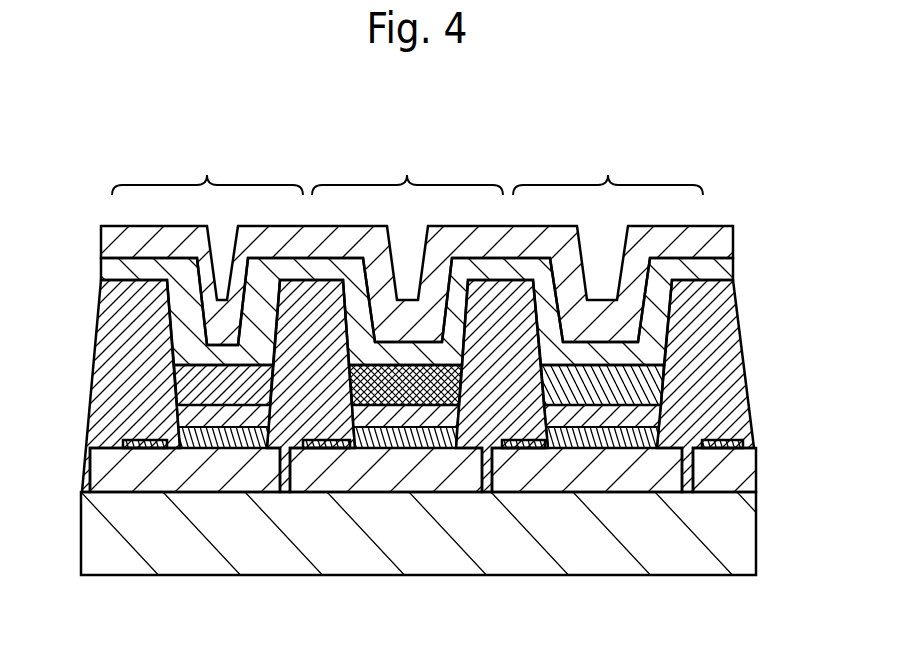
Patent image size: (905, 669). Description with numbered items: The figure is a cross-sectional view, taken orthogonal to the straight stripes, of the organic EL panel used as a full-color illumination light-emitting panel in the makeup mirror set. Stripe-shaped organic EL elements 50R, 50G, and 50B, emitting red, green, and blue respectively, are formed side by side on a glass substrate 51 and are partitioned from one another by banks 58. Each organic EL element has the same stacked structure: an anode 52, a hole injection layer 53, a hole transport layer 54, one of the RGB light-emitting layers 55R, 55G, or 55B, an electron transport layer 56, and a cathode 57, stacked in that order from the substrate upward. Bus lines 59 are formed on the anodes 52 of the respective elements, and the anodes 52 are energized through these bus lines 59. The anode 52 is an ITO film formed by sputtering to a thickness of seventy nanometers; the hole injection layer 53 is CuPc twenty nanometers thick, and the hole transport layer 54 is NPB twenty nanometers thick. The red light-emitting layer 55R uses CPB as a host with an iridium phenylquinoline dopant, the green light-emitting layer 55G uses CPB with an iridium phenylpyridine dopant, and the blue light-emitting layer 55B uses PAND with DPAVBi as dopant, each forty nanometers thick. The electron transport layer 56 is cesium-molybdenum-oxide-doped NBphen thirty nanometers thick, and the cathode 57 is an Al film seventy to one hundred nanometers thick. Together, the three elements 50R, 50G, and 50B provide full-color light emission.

The organic EL element (red) 50R is at (207, 168).
The organic EL element (green) 50G is at (407, 168).
The organic EL element (blue) 50B is at (608, 168).
The glass substrate 51 is at (745, 535).
The anode 52 is at (100, 463).
The hole injection layer 53 is at (178, 433).
The hole transport layer 54 is at (183, 418).
The R (red) light-emitting layer 55R is at (192, 384).
The G (green) light-emitting layer 55G is at (402, 410).
The B (blue) light-emitting layer 55B is at (637, 388).
The electron transport layer 56 is at (735, 272).
The cathode 57 is at (735, 248).
The bank 58 is at (108, 312).
The bus line 59 is at (325, 448).